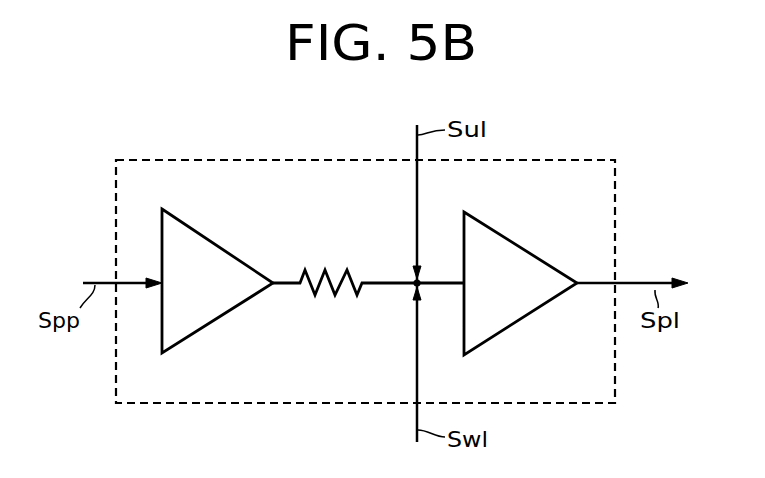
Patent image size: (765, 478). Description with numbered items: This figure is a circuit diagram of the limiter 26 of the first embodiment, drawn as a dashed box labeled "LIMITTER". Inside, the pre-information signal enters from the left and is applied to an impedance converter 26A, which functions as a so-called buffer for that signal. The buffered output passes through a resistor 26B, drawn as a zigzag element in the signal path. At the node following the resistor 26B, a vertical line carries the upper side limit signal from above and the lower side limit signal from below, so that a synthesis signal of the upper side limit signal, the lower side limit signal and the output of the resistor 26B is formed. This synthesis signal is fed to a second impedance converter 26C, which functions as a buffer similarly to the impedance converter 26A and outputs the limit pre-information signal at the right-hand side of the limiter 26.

The limiter 26 is at (552, 160).
The impedance converter 26A is at (215, 244).
The resistor 26B is at (327, 268).
The impedance converter 26C is at (522, 248).